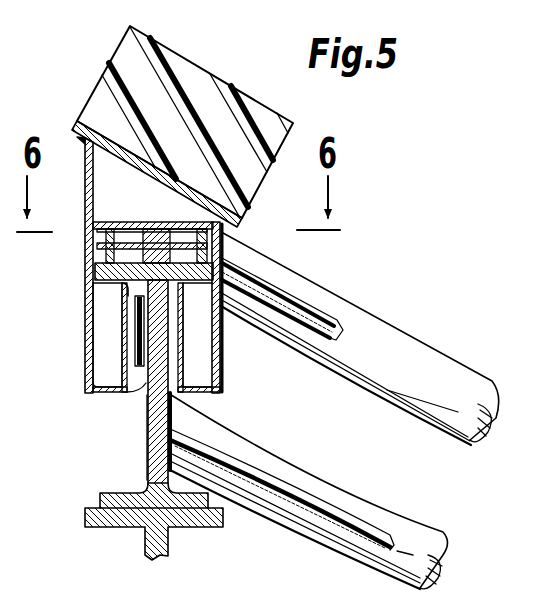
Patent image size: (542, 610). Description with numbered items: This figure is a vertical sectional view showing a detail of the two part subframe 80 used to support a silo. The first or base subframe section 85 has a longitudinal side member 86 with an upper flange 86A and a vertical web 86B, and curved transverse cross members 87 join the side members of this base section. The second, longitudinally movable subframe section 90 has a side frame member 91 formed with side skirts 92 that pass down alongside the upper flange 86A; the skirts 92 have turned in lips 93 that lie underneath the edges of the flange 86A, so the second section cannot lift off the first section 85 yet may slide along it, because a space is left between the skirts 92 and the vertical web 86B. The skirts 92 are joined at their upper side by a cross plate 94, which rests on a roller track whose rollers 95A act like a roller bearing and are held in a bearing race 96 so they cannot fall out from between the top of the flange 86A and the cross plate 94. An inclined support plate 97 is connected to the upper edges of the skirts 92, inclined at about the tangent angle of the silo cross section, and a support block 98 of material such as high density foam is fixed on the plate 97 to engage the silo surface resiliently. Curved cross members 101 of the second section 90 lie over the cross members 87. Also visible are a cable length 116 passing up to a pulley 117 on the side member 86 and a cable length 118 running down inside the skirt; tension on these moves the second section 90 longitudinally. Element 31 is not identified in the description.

The support block 98 is at (272, 106).
The inclined support plate 97 is at (78, 127).
The second subframe section 90 is at (68, 157).
The side skirt 92 is at (85, 186).
The side frame member 91 is at (224, 347).
The cross plate 94 is at (113, 221).
The upper flange 86A is at (157, 277).
The roller 95A is at (117, 242).
The bearing race 96 is at (108, 252).
The cable length 118 is at (127, 284).
The turned in lip 93 is at (122, 322).
The cable length 116 is at (136, 352).
The pulley 117 is at (138, 383).
The longitudinal side member 86 is at (150, 452).
The vertical web 86B is at (174, 400).
The first subframe section 85 is at (146, 470).
The base 31 is at (162, 543).
The subframe 80 is at (421, 345).
The cross member 101 is at (389, 397).
The curved transverse cross member 87 is at (357, 502).